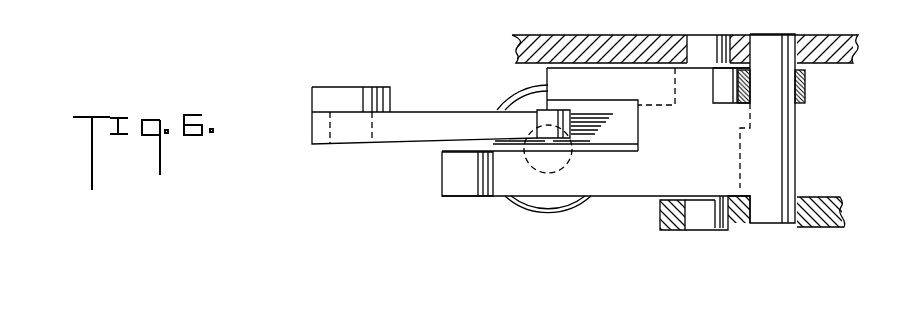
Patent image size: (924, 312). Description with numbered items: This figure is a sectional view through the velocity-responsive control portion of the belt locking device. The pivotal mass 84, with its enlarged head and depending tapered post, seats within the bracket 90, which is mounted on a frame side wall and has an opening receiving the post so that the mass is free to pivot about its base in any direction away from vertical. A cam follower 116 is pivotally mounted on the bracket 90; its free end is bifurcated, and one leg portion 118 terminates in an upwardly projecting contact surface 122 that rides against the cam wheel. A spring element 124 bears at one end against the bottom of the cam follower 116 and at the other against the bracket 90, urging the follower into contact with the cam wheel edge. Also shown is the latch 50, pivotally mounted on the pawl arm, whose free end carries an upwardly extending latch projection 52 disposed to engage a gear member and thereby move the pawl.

The latch 50 is at (390, 132).
The latch projection 52 is at (545, 112).
The pivotal mass 84 is at (540, 201).
The bracket 90 is at (843, 203).
The cam follower 116 is at (718, 143).
The leg portion 118 is at (645, 178).
The contact surface 122 is at (447, 187).
The spring element 124 is at (805, 98).